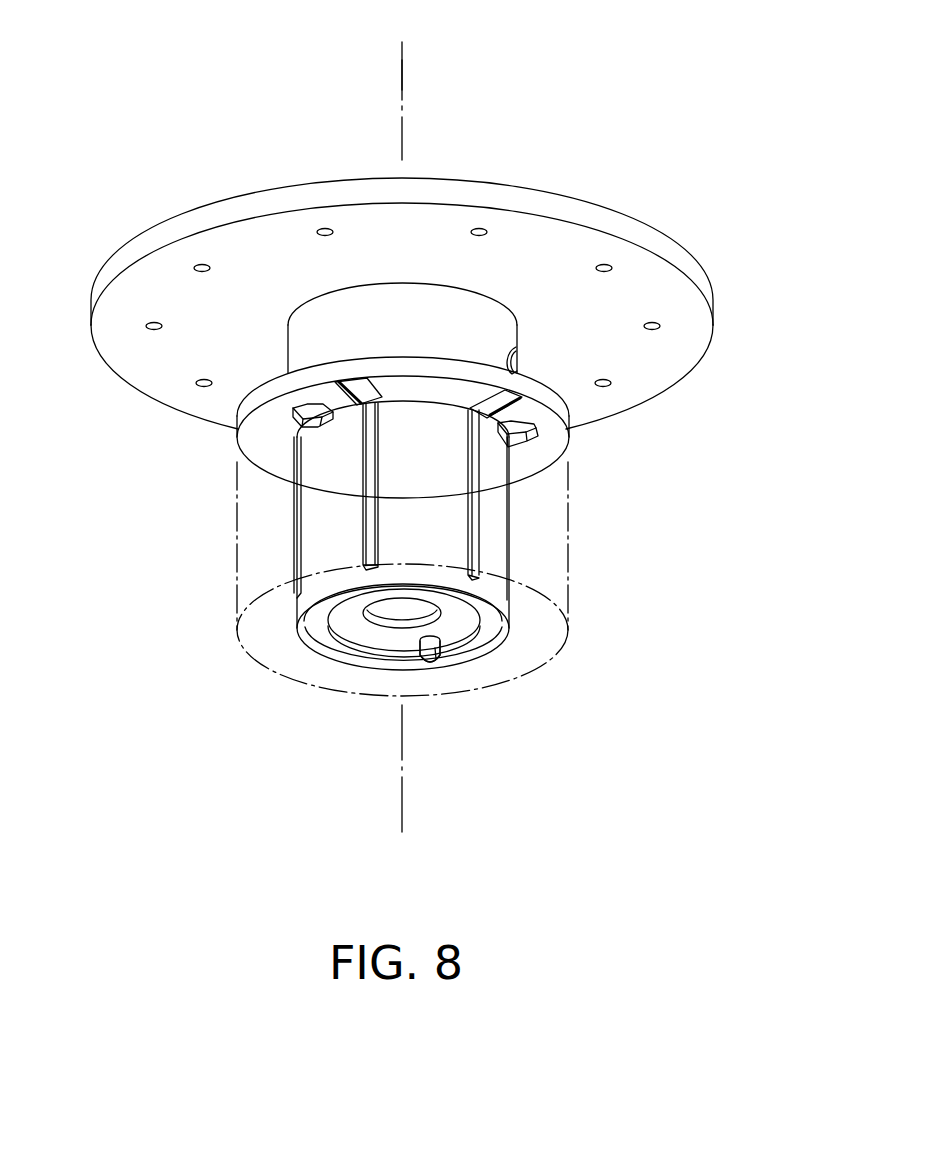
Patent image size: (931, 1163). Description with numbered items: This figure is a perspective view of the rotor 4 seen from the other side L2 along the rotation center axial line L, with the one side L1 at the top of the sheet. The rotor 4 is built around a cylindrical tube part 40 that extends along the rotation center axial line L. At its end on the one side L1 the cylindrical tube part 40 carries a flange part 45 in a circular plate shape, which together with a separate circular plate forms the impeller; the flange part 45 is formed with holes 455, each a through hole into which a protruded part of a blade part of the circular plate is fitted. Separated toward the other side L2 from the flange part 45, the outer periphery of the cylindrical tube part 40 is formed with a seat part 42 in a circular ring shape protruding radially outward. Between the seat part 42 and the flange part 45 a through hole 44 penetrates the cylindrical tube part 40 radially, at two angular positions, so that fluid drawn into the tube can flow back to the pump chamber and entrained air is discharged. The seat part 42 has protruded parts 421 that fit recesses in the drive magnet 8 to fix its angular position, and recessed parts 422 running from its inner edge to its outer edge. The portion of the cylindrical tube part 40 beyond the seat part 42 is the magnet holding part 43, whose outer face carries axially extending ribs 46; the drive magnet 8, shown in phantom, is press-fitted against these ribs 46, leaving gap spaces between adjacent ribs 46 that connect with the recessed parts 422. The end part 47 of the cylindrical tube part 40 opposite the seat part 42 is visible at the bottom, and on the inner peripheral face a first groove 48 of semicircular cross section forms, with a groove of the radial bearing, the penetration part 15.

The rotor 4 is at (155, 208).
The cylindrical tube part 40 is at (296, 349).
The seat part 42 is at (447, 367).
The protruded part 421 is at (323, 410).
The recessed part 422 is at (380, 392).
The magnet holding part 43 is at (507, 512).
The through hole 44 is at (518, 372).
The flange part 45 is at (660, 247).
The hole 455 is at (659, 328).
The ribs 46 is at (470, 500).
The end part 47 is at (368, 668).
The first groove 48 is at (436, 663).
The penetration part 15 is at (430, 651).
The drive magnet 8 is at (568, 572).
The one side L1 is at (399, 88).
The other side L2 is at (401, 785).
The rotation center axial line L is at (412, 75).